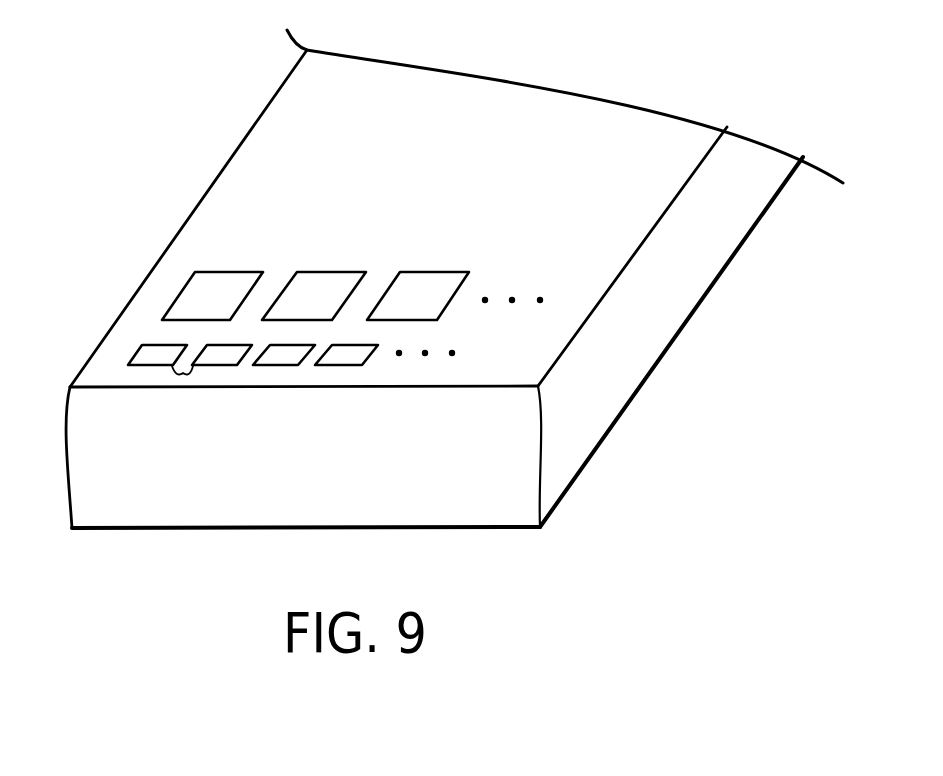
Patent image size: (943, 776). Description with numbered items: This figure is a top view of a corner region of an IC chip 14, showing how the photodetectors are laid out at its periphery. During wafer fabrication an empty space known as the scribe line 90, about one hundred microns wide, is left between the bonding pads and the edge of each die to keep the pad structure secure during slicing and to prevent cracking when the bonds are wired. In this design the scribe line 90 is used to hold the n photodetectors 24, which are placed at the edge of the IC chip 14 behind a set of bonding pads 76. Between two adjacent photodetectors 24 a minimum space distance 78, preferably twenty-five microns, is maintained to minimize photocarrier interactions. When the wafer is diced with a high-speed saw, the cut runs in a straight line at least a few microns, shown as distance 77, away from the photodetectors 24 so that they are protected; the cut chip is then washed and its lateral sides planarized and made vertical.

The IC chip 14 is at (475, 121).
The bonding pads 76 is at (215, 271).
The photodetectors 24 is at (153, 341).
The distance 77 is at (365, 365).
The minimum space distance 78 is at (186, 376).
The scribe line 90 is at (278, 349).